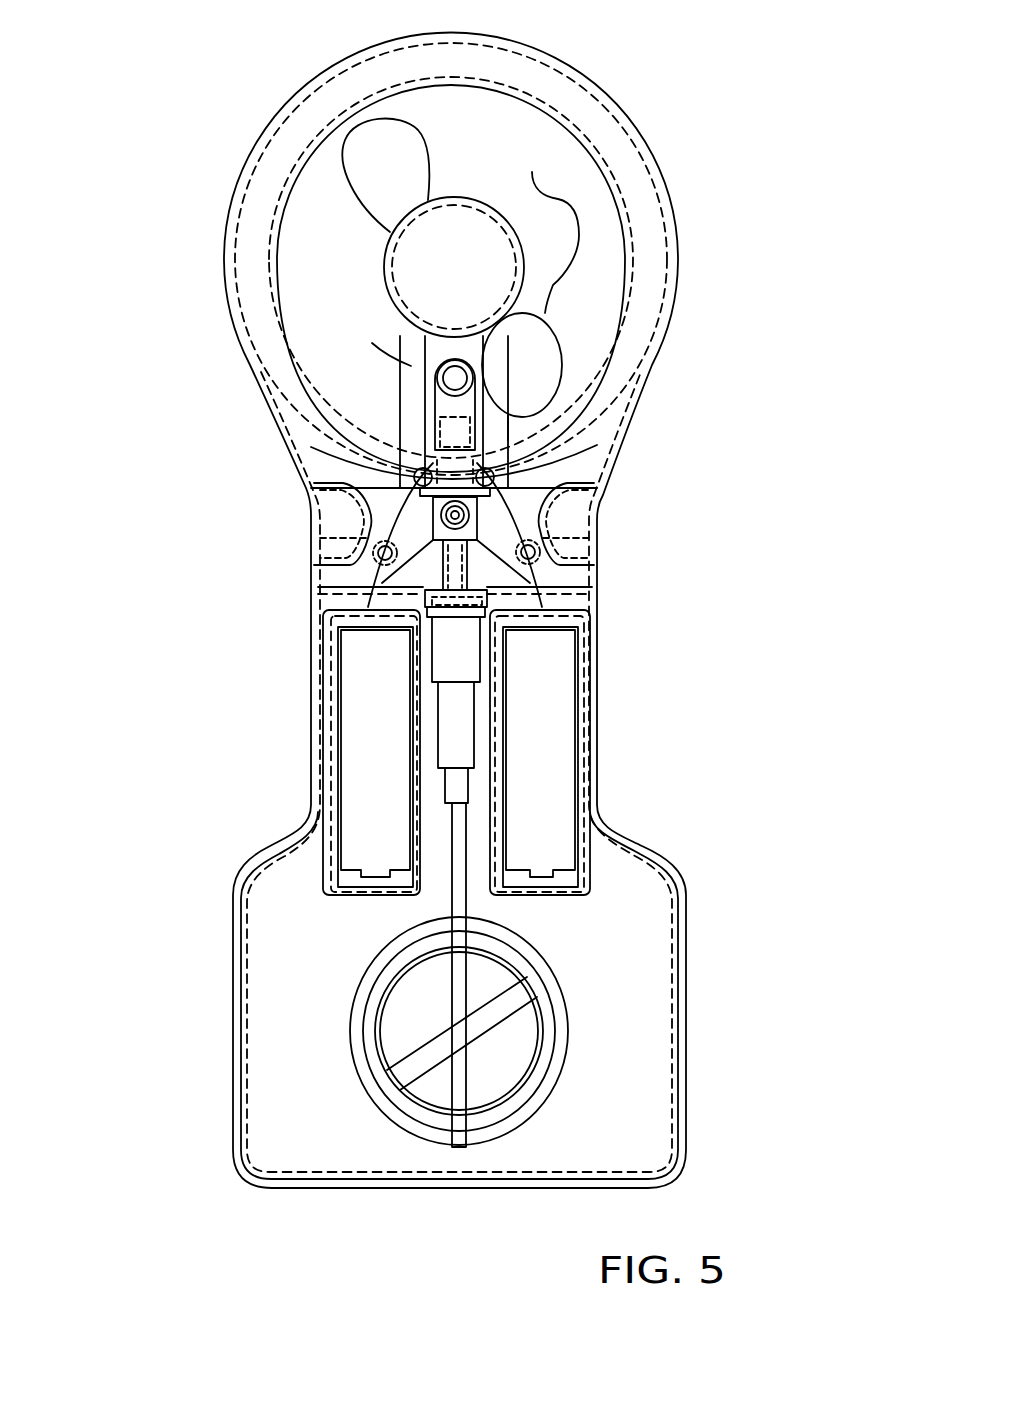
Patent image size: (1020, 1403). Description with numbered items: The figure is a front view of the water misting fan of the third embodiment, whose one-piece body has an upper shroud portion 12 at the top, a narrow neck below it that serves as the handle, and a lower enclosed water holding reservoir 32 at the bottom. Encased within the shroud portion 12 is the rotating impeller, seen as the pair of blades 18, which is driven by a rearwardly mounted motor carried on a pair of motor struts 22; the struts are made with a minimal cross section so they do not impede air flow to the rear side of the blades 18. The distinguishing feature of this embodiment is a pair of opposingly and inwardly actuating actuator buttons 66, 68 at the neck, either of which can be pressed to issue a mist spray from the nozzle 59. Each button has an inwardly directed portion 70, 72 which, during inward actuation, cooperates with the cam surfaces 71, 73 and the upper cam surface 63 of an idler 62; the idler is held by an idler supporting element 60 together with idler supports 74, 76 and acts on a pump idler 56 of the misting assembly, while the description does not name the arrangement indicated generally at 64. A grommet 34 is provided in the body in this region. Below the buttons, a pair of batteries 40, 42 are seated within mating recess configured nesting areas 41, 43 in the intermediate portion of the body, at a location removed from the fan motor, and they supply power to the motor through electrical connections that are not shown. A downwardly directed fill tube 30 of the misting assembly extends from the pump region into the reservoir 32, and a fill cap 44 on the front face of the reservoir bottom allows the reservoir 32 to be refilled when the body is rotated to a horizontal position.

The shroud portion 12 is at (327, 87).
The blades 18 is at (413, 155).
The motor struts 22 is at (487, 345).
The nozzle 59 is at (437, 380).
The upper cam surface 63 is at (515, 437).
The idler 62 is at (443, 502).
The pump idler 56 is at (600, 487).
The idler supporting element 60 is at (413, 480).
The inwardly directed portion 70 is at (400, 515).
The actuator button 68 is at (580, 518).
The actuator button 66 is at (323, 520).
The idler support 76 is at (597, 595).
The idler support 74 is at (332, 590).
The grommet 34 is at (600, 595).
The inwardly directed portion 72 is at (513, 518).
The neck assembly 64 is at (190, 546).
The cam surface 71 is at (428, 532).
The cam surface 73 is at (500, 590).
The battery 40 is at (373, 713).
The nesting area 41 is at (330, 840).
The battery 42 is at (540, 723).
The nesting area 43 is at (580, 860).
The reservoir 32 is at (340, 961).
The fill tube 30 is at (467, 900).
The fill cap 44 is at (400, 1073).